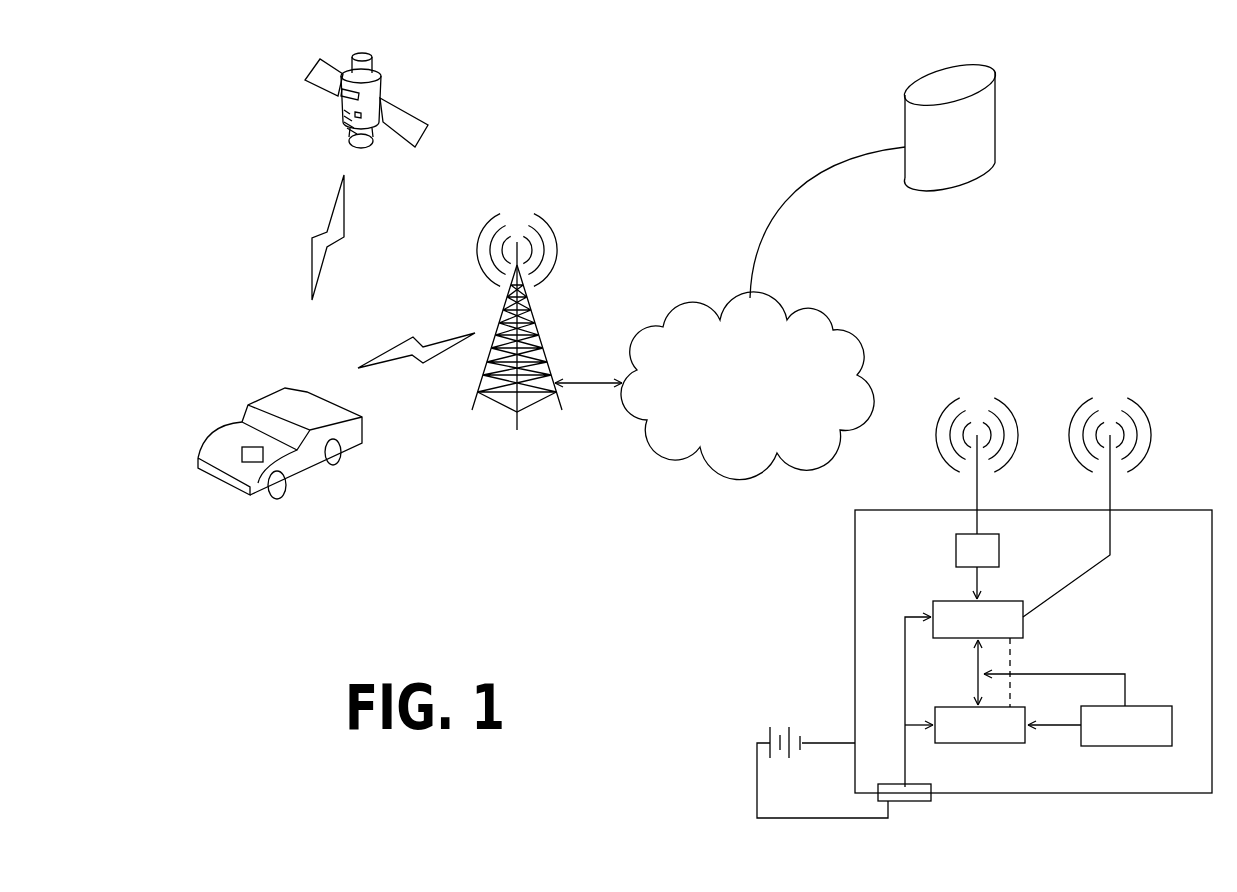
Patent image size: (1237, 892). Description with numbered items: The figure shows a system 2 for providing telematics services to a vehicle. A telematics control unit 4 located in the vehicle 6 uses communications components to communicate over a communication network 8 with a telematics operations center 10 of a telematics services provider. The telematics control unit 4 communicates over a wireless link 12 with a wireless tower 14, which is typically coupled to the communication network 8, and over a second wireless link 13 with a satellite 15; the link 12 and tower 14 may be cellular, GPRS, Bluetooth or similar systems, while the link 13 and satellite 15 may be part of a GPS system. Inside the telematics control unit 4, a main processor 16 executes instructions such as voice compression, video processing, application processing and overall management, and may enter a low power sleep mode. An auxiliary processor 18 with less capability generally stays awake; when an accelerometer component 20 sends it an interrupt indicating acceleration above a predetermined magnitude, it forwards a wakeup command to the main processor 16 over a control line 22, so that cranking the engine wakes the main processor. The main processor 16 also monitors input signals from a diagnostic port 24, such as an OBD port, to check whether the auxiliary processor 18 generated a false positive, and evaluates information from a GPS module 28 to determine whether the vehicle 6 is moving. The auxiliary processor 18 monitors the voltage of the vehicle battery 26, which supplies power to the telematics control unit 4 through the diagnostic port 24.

The system 2 is at (1090, 195).
The telematics control unit 4 is at (253, 462).
The vehicle 6 is at (362, 417).
The communication network 8 is at (828, 318).
The telematics operations center 10 is at (935, 183).
The wireless link 12 is at (390, 359).
The wireless link 13 is at (344, 210).
The wireless tower 14 is at (522, 412).
The satellite 15 is at (428, 125).
The main processor 16 is at (1002, 600).
The auxiliary processor 18 is at (993, 743).
The accelerometer component 20 is at (1097, 746).
The control line 22 is at (1010, 662).
The diagnostic port 24 is at (920, 801).
The battery 26 is at (756, 716).
The GPS module 28 is at (999, 552).